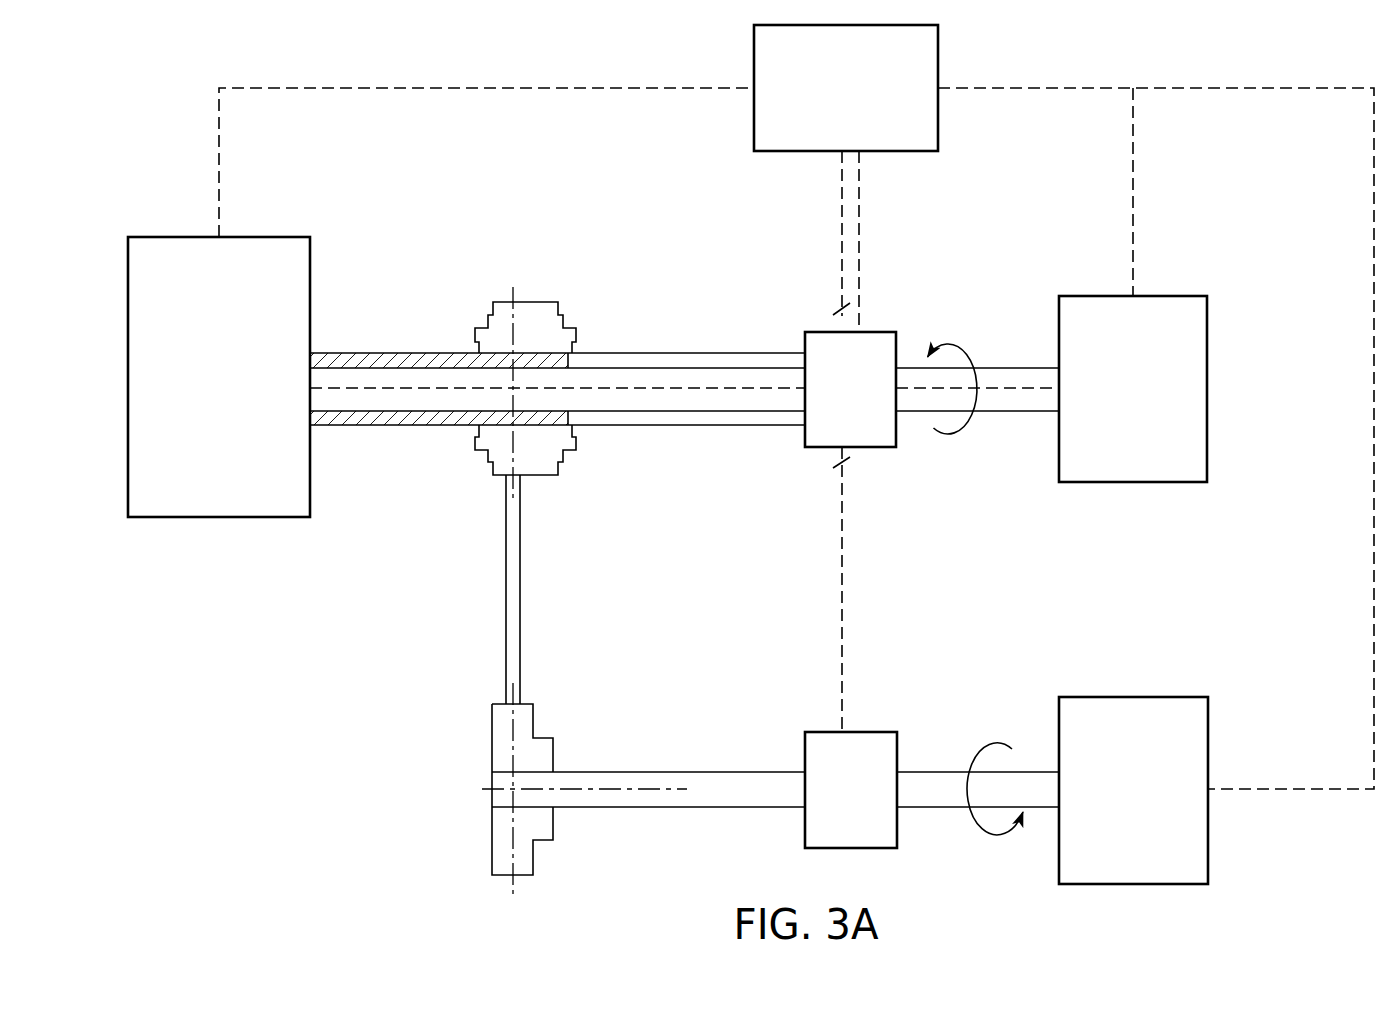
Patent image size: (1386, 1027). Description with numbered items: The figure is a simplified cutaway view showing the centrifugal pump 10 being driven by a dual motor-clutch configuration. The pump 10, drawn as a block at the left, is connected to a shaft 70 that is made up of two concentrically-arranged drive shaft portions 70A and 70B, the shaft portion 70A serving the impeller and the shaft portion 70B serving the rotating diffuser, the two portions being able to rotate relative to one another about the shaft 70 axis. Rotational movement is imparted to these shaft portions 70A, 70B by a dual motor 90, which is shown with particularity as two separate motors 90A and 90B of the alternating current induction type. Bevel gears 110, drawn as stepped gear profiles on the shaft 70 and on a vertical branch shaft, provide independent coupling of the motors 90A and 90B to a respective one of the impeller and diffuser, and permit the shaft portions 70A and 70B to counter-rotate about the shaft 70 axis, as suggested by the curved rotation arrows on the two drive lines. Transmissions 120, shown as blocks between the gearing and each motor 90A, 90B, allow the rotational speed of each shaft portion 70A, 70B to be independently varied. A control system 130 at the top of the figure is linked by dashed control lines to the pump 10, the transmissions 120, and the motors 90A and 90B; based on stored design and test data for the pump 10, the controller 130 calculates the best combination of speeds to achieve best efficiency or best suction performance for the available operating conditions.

The centrifugal pump 10 is at (233, 390).
The shaft 70 is at (392, 334).
The drive shaft portion 70A is at (340, 400).
The drive shaft portion 70B is at (435, 420).
The bevel gears 110 is at (497, 477).
The transmissions 120 is at (880, 448).
The control system 130 is at (822, 104).
The dual motor 90 is at (1233, 471).
The motor 90A is at (1104, 408).
The motor 90B is at (1162, 808).